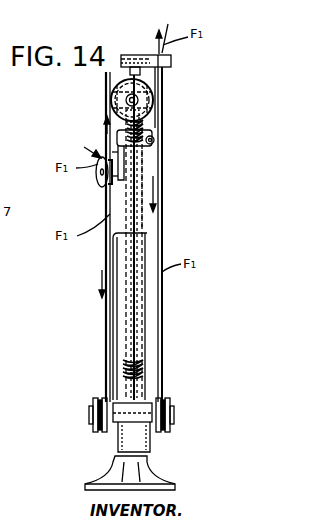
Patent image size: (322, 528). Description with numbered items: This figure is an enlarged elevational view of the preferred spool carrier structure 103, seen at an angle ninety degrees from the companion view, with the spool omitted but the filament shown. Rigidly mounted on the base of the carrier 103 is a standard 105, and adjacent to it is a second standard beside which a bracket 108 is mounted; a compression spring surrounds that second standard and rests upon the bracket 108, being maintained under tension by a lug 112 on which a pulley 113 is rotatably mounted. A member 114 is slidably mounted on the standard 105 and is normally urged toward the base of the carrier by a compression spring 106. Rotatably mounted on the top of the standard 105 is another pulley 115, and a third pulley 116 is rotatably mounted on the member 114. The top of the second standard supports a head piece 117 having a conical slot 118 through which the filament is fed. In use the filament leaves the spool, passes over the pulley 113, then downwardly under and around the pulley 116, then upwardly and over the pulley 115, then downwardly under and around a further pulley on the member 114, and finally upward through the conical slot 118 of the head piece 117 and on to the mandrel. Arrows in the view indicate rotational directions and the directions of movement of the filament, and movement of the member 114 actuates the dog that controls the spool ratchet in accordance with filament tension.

The spool carrier structure 103 is at (113, 462).
The standard 105 is at (150, 216).
The compression spring 106 is at (153, 142).
The bracket 108 is at (116, 316).
The lug 112 is at (155, 132).
The pulley 113 is at (100, 184).
The member 114 is at (166, 400).
The pulley 115 is at (112, 93).
The third pulley 116 is at (92, 412).
The head piece 117 is at (140, 56).
The conical slot 118 is at (172, 62).